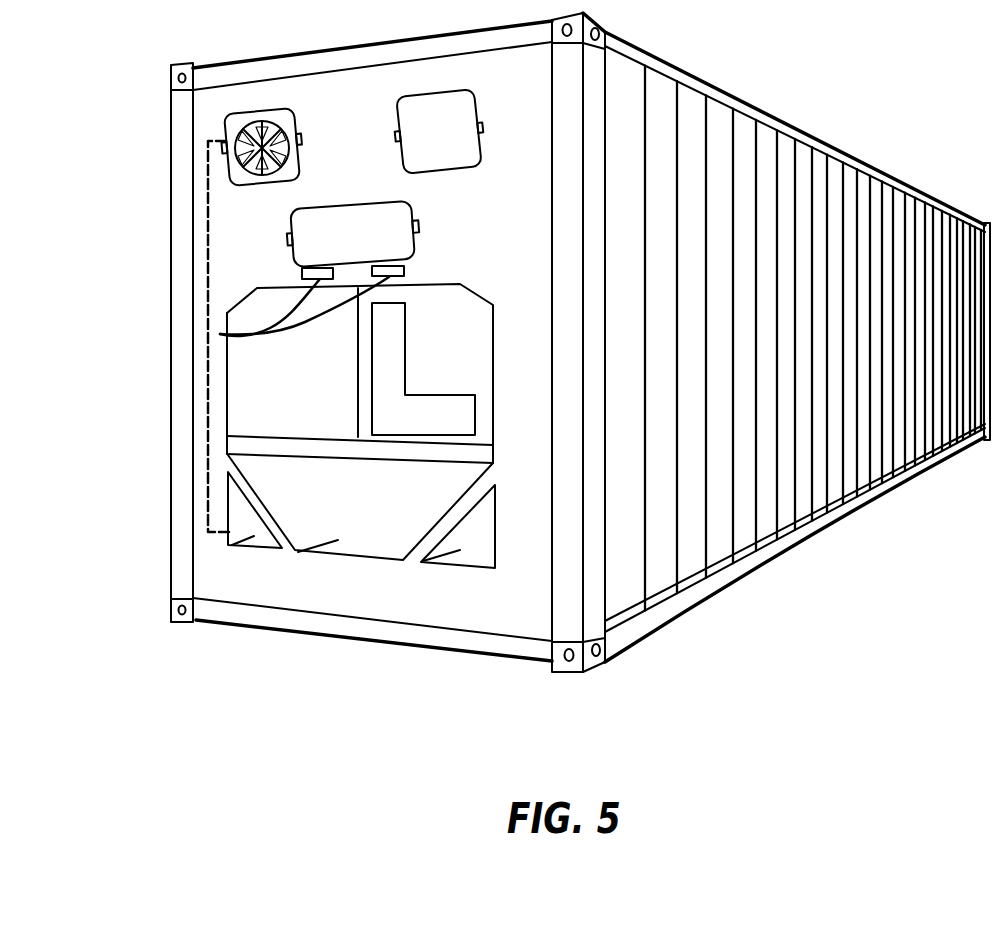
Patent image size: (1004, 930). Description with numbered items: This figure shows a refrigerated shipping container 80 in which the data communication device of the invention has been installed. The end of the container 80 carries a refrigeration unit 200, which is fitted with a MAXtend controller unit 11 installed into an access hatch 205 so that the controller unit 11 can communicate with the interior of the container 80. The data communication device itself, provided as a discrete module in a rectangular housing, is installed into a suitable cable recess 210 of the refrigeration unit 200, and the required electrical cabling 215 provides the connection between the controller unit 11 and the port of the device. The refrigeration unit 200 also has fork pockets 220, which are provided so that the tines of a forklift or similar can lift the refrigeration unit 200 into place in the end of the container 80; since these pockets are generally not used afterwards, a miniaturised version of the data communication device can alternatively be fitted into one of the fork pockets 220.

The shipping container 80 is at (794, 129).
The refrigeration unit 200 is at (163, 388).
The access hatch 205 is at (256, 112).
The controller unit 11 is at (258, 128).
The electrical cabling 215 is at (207, 269).
The fork pockets 220 is at (220, 334).
The cable recess 210 is at (250, 535).